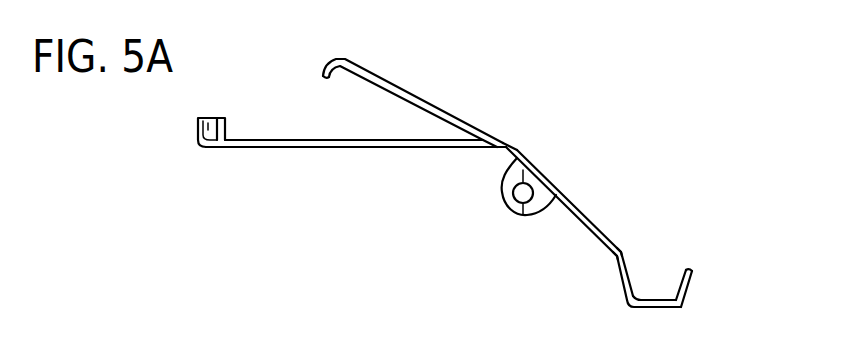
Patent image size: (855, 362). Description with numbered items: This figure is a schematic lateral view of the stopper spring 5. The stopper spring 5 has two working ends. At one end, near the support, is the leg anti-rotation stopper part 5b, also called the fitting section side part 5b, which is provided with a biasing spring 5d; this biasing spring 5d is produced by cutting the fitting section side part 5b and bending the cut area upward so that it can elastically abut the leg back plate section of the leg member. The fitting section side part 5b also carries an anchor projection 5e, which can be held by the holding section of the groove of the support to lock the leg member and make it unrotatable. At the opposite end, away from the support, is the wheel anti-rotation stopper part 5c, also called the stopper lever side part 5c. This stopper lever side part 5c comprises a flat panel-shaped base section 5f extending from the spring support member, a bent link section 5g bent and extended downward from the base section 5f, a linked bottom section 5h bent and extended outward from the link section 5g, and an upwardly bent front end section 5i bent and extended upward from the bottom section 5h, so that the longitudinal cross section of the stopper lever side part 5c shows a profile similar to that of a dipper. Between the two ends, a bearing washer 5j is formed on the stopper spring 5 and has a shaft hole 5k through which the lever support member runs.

The stopper spring 5 is at (518, 149).
The leg anti-rotation stopper part 5b is at (335, 146).
The wheel anti-rotation stopper part 5c is at (617, 244).
The biasing spring 5d is at (440, 108).
The anchor projection 5e is at (213, 118).
The base section 5f is at (582, 208).
The link section 5g is at (621, 277).
The bottom section 5h is at (662, 308).
The front end section 5i is at (694, 281).
The bearing washer 5j is at (500, 192).
The shaft hole 5k is at (525, 198).